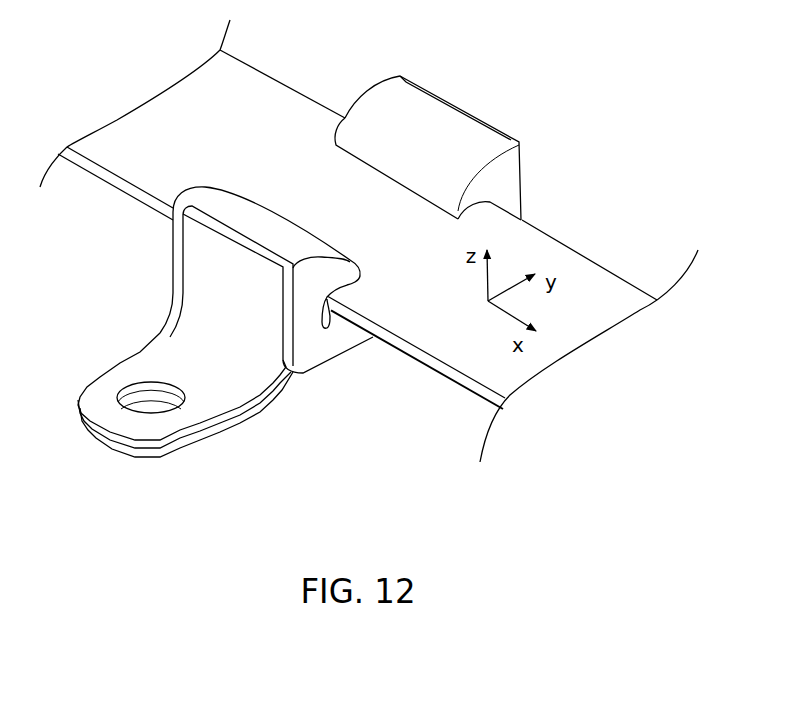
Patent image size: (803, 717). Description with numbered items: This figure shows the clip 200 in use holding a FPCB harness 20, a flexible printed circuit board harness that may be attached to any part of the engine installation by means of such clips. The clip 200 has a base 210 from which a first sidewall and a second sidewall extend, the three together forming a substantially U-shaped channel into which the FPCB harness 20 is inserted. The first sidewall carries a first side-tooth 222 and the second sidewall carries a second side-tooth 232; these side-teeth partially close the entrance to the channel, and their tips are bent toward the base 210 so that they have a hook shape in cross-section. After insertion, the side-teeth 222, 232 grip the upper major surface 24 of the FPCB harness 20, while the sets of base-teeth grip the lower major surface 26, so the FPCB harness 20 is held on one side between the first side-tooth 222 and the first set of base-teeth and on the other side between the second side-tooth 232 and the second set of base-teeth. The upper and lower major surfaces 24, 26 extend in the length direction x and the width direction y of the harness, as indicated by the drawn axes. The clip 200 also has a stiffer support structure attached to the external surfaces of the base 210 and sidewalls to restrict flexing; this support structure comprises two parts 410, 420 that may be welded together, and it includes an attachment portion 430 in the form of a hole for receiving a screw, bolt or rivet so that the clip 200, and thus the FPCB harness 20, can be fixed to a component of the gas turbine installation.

The FPCB harness 20 is at (359, 236).
The upper major surface 24 is at (257, 104).
The lower major surface 26 is at (112, 193).
The clip 200 is at (249, 357).
The base 210 is at (345, 342).
The first side-tooth 222 is at (451, 118).
The second side-tooth 232 is at (227, 212).
The support structure part 410 is at (182, 412).
The support structure part 420 is at (497, 127).
The attachment portion 430 is at (150, 404).